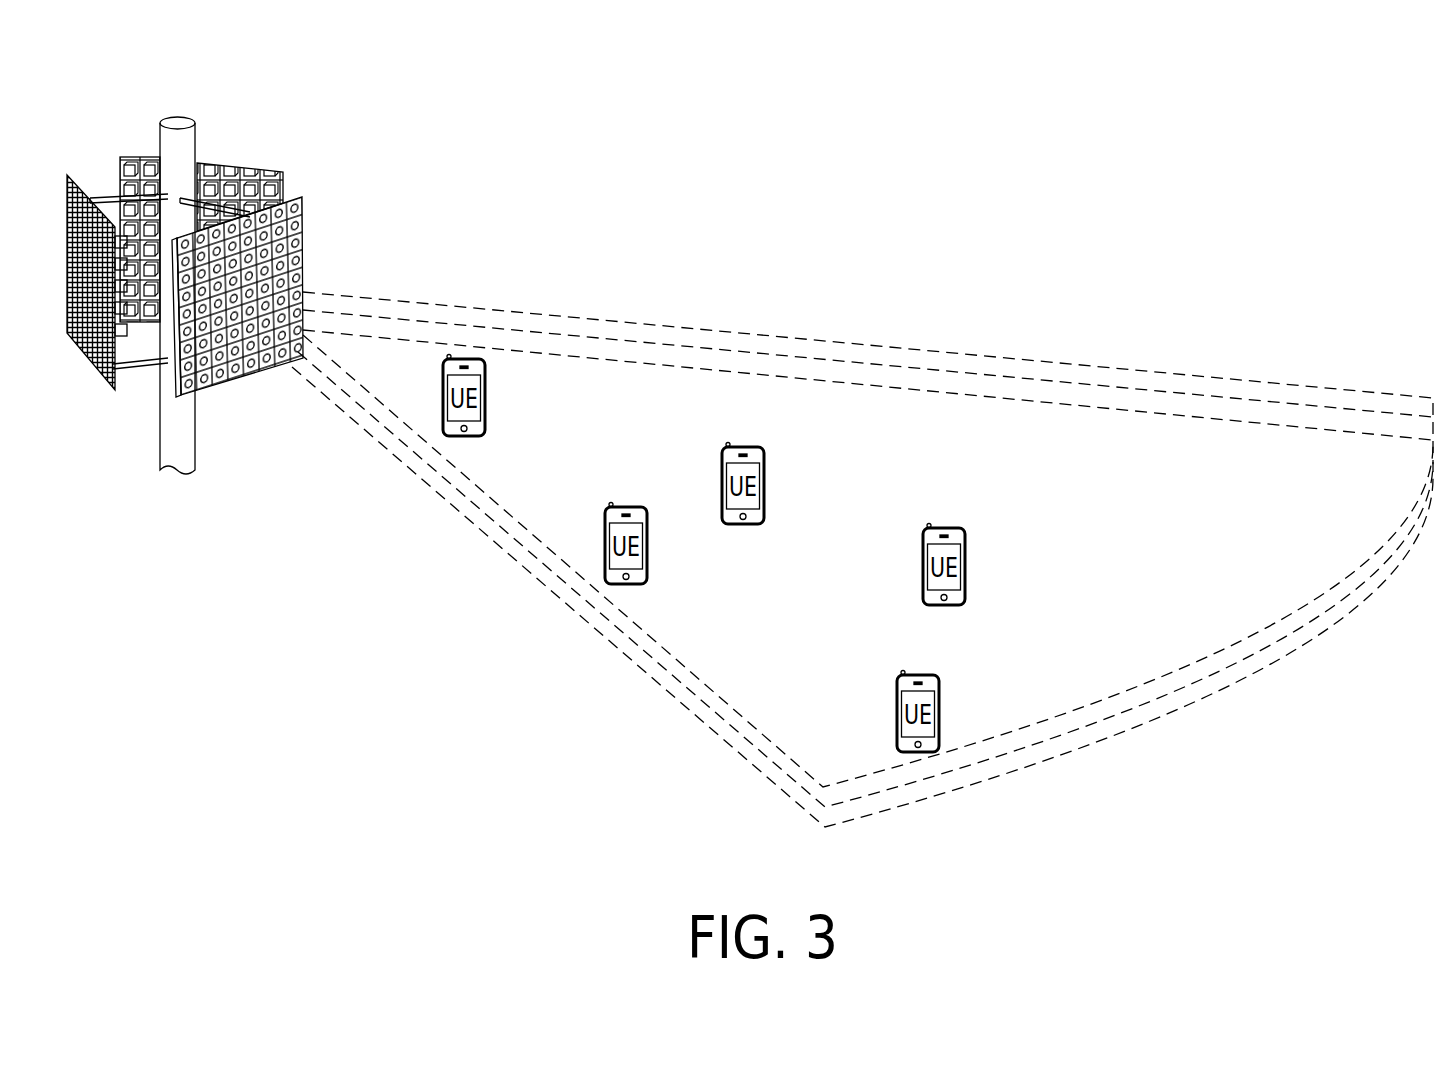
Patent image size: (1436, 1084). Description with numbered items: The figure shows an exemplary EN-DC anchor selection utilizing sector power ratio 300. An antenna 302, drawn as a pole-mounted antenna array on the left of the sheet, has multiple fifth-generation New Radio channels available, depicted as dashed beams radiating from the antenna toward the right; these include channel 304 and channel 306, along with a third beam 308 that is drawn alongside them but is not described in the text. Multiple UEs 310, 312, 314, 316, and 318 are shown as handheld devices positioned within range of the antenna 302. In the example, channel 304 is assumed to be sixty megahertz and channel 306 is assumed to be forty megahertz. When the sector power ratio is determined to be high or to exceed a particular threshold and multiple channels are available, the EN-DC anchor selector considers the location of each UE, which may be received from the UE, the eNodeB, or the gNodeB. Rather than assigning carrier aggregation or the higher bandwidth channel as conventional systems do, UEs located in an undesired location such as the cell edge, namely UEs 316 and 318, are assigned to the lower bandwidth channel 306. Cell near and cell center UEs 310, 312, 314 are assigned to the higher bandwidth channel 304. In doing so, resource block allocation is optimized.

The EN-DC anchor selection utilizing sector power ratio 300 is at (445, 82).
The antenna 302 is at (178, 120).
The 5G NR channel 304 is at (493, 500).
The 5G NR channel 306 is at (437, 470).
The third beam 308 is at (380, 438).
The UE 310 is at (486, 394).
The UE 312 is at (765, 480).
The UE 314 is at (966, 561).
The UE 316 is at (648, 541).
The UE 318 is at (940, 708).